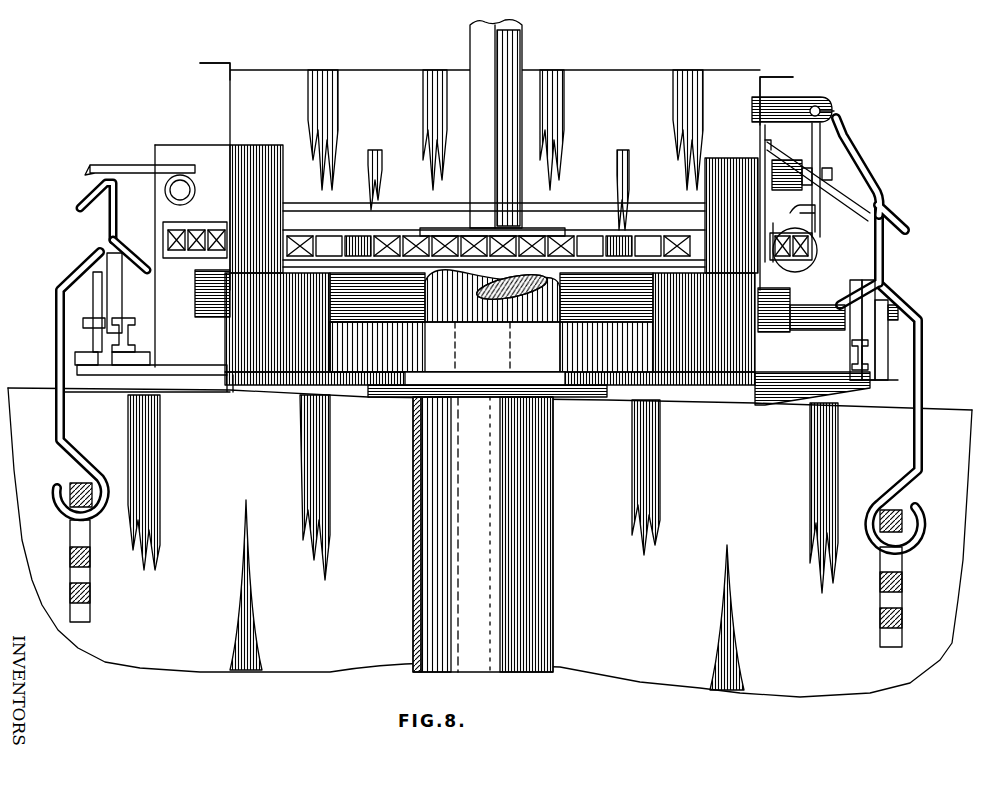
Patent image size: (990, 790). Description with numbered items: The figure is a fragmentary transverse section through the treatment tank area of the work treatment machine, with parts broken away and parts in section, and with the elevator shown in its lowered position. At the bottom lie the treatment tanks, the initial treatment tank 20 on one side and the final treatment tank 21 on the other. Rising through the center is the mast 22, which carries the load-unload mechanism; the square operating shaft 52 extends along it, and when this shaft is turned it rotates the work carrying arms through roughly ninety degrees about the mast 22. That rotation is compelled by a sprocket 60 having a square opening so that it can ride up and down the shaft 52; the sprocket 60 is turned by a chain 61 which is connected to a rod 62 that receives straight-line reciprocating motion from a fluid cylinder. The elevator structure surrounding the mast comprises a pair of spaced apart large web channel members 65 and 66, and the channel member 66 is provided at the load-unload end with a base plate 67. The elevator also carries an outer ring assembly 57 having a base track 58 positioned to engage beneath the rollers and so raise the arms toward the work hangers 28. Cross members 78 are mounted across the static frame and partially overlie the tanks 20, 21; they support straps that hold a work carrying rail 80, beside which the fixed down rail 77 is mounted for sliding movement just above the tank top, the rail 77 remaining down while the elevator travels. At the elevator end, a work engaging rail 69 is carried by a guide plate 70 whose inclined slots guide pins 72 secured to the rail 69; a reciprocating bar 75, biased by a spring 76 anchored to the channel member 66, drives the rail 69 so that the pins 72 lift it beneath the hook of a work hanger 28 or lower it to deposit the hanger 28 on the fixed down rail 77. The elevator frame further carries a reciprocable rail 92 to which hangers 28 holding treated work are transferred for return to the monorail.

The initial treatment tank 20 is at (740, 490).
The final treatment tank 21 is at (220, 503).
The mast 22 is at (530, 567).
The work hanger 28 is at (58, 362).
The square operating shaft 52 is at (515, 52).
The outer ring assembly 57 is at (484, 355).
The base track 58 is at (472, 385).
The sprocket 60 is at (432, 228).
The chain 61 is at (583, 238).
The rod 62 is at (815, 254).
The web channel member 65 is at (240, 78).
The web channel member 66 is at (758, 78).
The base plate 67 is at (400, 121).
The work engaging rail 69 is at (873, 327).
The guide plate 70 is at (887, 255).
The pin 72 is at (915, 312).
The reciprocating rod or bar 75 is at (860, 165).
The spring 76 is at (835, 108).
The fixed down rail 77 is at (862, 328).
The cross member 78 is at (140, 368).
The work carrying rail 80 is at (856, 312).
The reciprocable rail 92 is at (105, 268).